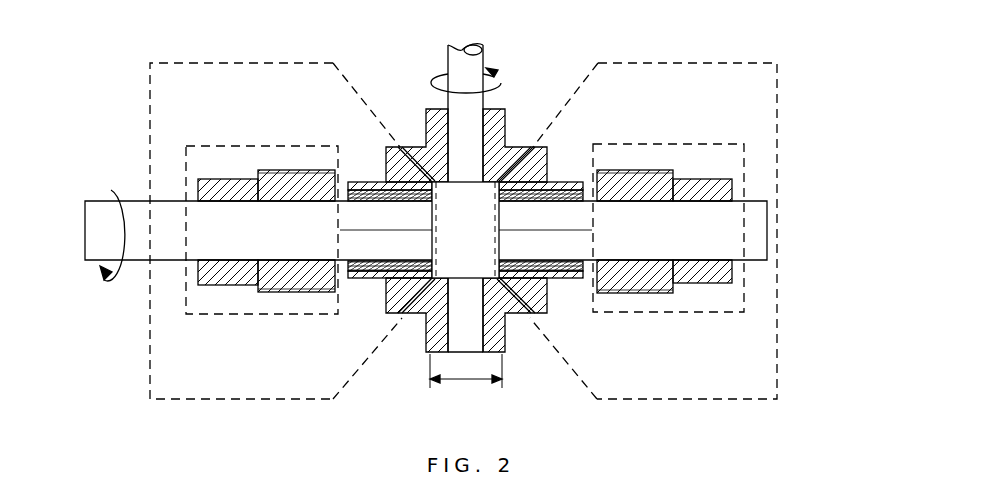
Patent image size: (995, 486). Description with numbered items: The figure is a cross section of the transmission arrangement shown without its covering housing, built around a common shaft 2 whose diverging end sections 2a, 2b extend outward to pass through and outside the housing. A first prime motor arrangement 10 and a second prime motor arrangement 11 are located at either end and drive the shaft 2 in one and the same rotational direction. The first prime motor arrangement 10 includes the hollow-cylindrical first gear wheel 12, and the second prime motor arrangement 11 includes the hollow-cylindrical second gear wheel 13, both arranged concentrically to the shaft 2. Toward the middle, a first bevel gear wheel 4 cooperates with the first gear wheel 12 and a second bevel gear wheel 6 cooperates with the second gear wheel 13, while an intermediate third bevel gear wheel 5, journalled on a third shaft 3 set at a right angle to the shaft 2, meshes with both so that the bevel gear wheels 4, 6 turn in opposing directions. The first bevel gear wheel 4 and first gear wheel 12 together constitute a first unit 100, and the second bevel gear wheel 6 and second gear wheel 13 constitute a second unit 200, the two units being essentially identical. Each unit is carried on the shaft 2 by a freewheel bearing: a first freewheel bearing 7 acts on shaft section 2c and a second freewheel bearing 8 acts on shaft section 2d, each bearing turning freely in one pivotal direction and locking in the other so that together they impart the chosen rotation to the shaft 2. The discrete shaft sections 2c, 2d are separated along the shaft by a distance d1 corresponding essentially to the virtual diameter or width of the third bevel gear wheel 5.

The shaft 2 is at (82, 233).
The end section 2a is at (289, 250).
The end section 2b is at (633, 293).
The shaft section 2c is at (366, 212).
The shaft section 2d is at (568, 212).
The third shaft 3 is at (476, 46).
The first bevel gear wheel 4 is at (389, 147).
The third bevel gear wheel 5 is at (506, 110).
The second bevel gear wheel 6 is at (549, 147).
The first freewheel bearing 7 is at (396, 318).
The second freewheel bearing 8 is at (526, 318).
The first prime motor arrangement 10 is at (208, 143).
The second prime motor arrangement 11 is at (722, 141).
The first gear wheel 12 is at (298, 168).
The second gear wheel 13 is at (632, 168).
The first unit 100 is at (146, 366).
The second unit 200 is at (780, 366).
The distance d1 is at (466, 383).